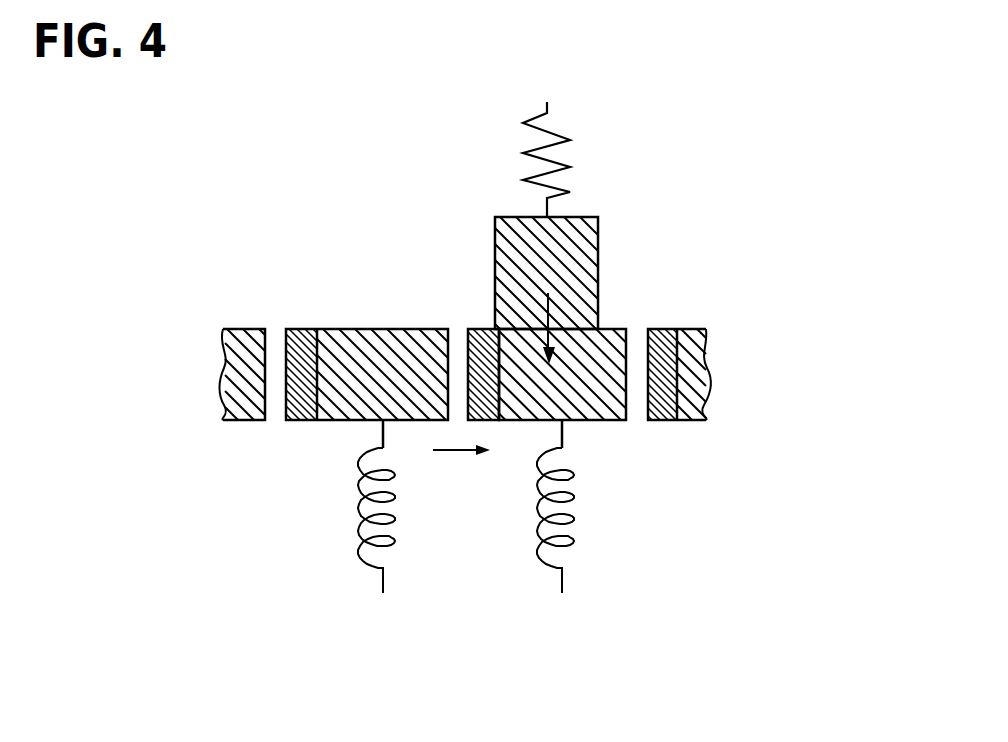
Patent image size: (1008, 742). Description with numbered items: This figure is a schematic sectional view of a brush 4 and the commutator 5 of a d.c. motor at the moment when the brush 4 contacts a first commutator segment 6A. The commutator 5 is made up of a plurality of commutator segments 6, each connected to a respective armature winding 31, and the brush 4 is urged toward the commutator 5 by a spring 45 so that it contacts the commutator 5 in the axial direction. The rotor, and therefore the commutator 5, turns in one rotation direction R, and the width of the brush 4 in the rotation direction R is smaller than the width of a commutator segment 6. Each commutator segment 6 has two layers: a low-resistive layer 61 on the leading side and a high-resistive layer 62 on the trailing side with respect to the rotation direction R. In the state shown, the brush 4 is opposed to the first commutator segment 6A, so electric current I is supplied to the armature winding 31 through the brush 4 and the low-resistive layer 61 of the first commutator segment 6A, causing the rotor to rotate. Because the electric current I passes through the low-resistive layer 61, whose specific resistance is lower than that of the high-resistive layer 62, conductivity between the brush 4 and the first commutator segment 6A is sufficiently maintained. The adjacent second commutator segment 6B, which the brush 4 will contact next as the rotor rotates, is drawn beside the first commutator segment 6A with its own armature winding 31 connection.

The spring 45 is at (560, 148).
The brush 4 is at (573, 267).
The electric current I is at (548, 317).
The high-resistive layer 62 is at (480, 328).
The low-resistive layer 61 is at (600, 355).
The commutator segment 6 is at (490, 403).
The first commutator segment 6A is at (575, 403).
The second commutator segment 6B is at (300, 445).
The commutator 5 is at (738, 390).
The armature winding 31 is at (540, 553).
The rotation direction R is at (461, 466).